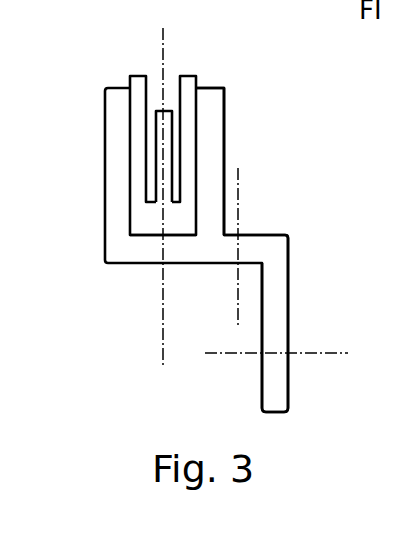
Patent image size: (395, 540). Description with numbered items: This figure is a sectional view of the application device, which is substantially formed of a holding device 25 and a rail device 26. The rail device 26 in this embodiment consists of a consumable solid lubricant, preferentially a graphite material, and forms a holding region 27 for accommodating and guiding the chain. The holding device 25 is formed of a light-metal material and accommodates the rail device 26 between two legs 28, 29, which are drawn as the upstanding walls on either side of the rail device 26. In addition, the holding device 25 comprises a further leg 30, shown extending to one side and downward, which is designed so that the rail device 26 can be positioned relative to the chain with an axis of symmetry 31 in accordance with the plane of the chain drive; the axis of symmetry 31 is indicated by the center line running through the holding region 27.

The holding device 25 is at (103, 128).
The rail device 26 is at (145, 213).
The holding region 27 is at (157, 76).
The leg 28 is at (117, 162).
The leg 29 is at (212, 122).
The leg 30 is at (278, 282).
The axis of symmetry 31 is at (163, 325).